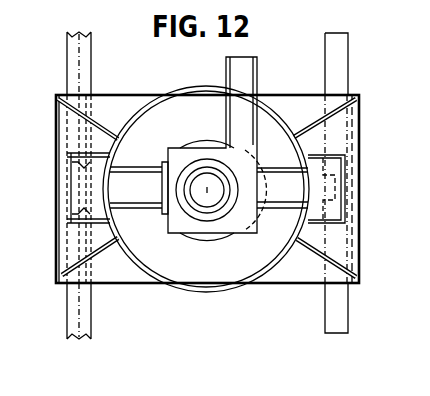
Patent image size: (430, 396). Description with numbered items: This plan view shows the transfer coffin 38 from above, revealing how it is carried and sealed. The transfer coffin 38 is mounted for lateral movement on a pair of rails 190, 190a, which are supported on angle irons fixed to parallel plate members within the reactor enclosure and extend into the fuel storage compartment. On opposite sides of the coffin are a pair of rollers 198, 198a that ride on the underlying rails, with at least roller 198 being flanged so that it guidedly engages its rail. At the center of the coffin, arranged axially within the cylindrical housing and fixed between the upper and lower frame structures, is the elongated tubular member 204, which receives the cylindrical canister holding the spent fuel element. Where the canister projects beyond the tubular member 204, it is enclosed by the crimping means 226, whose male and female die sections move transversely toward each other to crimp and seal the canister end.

The transfer coffin 38 is at (231, 295).
The rail 190 is at (89, 322).
The rail 190a is at (343, 311).
The roller 198 is at (52, 263).
The roller 198a is at (363, 258).
The tubular member 204 is at (203, 207).
The crimping means 226 is at (278, 163).